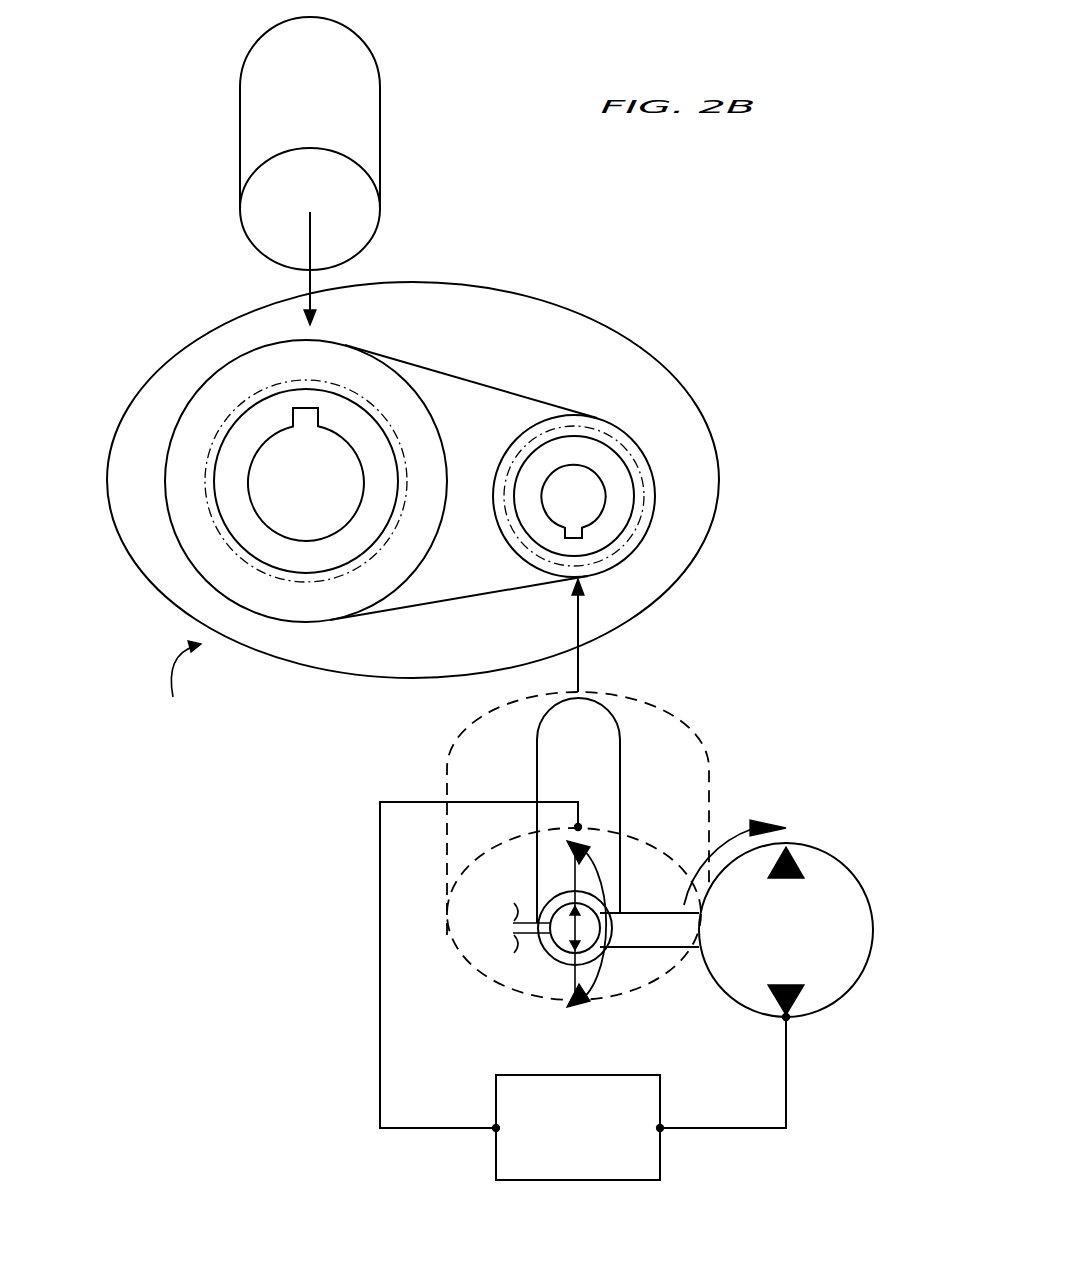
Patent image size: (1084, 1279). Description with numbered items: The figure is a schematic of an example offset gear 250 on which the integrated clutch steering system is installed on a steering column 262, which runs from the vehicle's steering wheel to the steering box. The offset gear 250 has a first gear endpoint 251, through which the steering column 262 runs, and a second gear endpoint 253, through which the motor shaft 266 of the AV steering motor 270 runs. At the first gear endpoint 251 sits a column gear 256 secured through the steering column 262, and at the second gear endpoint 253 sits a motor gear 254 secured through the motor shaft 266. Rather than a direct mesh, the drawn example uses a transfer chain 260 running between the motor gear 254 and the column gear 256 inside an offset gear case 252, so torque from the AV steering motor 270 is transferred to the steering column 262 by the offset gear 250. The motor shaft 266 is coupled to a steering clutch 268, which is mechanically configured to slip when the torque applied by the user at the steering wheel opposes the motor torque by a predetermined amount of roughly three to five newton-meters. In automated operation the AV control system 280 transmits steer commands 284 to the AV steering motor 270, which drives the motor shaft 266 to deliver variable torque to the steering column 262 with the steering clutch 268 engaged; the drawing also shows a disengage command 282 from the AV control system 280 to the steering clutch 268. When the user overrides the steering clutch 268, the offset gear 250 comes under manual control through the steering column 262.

The offset gear 250 is at (174, 692).
The first gear endpoint 251 is at (115, 627).
The offset gear case 252 is at (700, 408).
The second gear endpoint 253 is at (808, 498).
The motor gear 254 is at (612, 513).
The column gear 256 is at (232, 398).
The transfer chain 260 is at (447, 377).
The steering column 262 is at (273, 150).
The motor shaft 266 is at (563, 753).
The steering clutch 268 is at (663, 762).
The AV steering motor 270 is at (793, 925).
The AV control system 280 is at (578, 1127).
The disengage command 282 is at (435, 967).
The steer commands 284 is at (773, 1073).